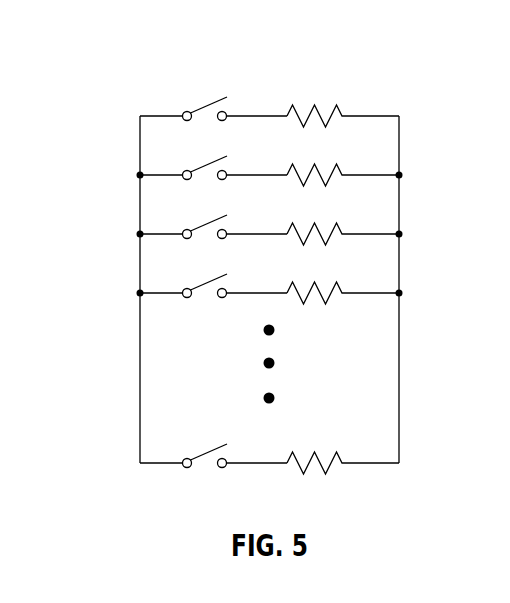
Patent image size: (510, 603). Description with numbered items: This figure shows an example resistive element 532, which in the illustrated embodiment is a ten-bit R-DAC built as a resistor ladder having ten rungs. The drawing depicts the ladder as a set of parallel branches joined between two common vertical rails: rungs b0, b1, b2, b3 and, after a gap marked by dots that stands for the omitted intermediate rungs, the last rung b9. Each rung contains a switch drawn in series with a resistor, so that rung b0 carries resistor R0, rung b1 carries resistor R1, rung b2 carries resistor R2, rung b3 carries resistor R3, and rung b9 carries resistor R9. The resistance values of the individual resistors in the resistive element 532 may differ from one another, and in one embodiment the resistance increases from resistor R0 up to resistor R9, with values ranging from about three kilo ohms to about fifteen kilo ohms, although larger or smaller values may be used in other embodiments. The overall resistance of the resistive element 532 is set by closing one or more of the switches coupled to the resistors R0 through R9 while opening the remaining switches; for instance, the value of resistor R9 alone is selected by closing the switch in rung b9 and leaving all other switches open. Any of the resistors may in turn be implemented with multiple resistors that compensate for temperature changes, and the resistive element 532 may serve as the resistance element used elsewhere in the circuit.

The resistive element 532 is at (220, 258).
The rung b0 is at (213, 99).
The rung b1 is at (213, 158).
The rung b2 is at (213, 217).
The rung b3 is at (213, 276).
The rung b9 is at (213, 446).
The resistor R0 is at (343, 99).
The resistor R1 is at (343, 158).
The resistor R2 is at (343, 217).
The resistor R3 is at (343, 276).
The resistor R9 is at (343, 446).